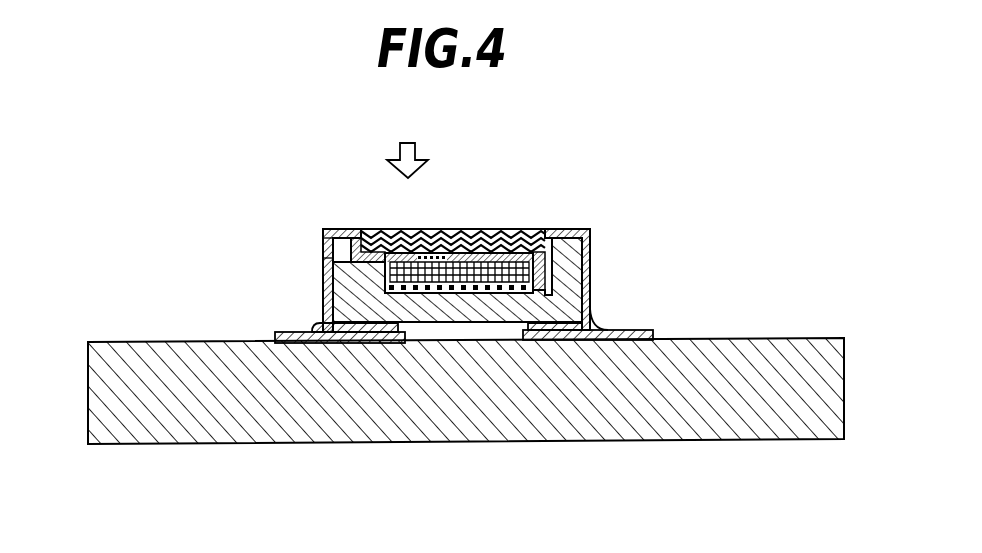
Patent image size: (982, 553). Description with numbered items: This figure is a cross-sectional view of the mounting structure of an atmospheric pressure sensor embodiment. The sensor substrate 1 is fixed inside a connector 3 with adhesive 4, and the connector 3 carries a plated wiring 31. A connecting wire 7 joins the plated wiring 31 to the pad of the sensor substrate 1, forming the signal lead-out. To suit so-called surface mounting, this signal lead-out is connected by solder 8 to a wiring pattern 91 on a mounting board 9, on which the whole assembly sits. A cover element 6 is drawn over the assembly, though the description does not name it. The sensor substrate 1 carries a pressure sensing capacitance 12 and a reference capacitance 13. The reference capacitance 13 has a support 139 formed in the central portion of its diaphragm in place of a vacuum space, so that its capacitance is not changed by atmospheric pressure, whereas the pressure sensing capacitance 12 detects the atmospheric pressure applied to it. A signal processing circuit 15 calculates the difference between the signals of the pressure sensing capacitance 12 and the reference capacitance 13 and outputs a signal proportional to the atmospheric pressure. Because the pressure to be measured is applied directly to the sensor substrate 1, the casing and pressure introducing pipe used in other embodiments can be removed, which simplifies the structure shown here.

The sensor substrate 1 is at (577, 263).
The connector 3 is at (588, 309).
The adhesive 4 is at (361, 290).
The cap 6 is at (530, 228).
The connecting wire 7 is at (377, 230).
The solder 8 is at (312, 325).
The mounting board 9 is at (490, 443).
The pressure sensing capacitance 12 is at (458, 230).
The reference capacitance 13 is at (488, 230).
The signal processing circuit 15 is at (417, 230).
The plated wiring 31 is at (323, 245).
The wiring pattern 91 is at (275, 335).
The support 139 is at (513, 230).